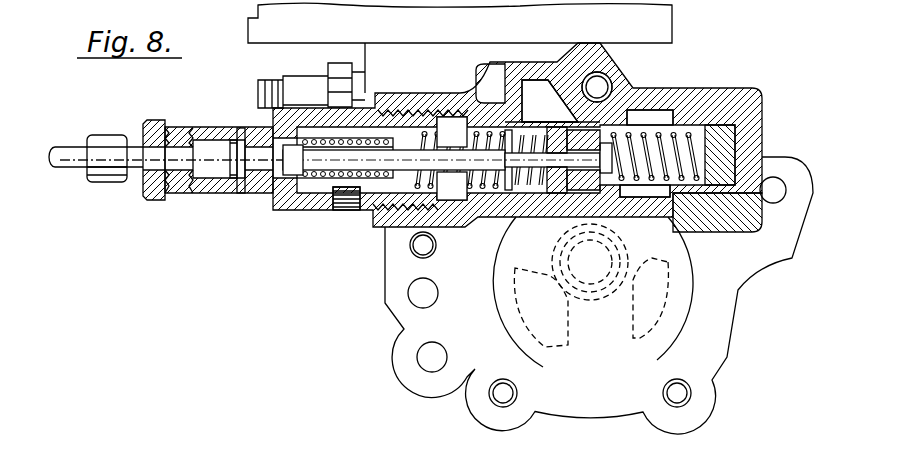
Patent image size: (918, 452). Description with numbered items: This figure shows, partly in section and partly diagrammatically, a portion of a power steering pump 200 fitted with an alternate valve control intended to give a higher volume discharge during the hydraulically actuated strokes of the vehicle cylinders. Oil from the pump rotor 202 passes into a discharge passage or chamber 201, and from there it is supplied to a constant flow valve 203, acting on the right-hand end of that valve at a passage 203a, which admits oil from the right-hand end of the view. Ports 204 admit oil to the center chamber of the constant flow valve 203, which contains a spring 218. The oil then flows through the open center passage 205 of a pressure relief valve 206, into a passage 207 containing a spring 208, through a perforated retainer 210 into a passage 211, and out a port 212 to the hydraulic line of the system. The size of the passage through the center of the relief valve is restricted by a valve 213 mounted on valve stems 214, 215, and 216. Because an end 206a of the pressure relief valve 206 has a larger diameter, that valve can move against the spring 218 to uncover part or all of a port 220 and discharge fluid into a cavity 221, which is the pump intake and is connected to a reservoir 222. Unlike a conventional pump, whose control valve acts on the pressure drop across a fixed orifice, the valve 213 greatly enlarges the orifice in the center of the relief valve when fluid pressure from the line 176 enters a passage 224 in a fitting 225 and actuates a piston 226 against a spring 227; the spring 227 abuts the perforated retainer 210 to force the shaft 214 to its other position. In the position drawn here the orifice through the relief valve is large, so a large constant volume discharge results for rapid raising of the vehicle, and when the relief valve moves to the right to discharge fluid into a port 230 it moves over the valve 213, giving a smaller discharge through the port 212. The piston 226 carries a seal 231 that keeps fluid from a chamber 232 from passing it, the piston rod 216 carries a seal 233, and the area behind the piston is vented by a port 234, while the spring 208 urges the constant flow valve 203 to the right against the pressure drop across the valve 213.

The line 176 is at (68, 153).
The pump 200 is at (750, 100).
The discharge passage or chamber 201 is at (668, 220).
The pump rotor 202 is at (650, 313).
The constant flow valve 203 is at (715, 133).
The passage 203a is at (733, 195).
The ports 204 is at (645, 194).
The open center passage 205 is at (640, 112).
The pressure relief valve 206 is at (612, 88).
The end of the valve 206a is at (520, 125).
The passage 207 is at (458, 228).
The spring 208 is at (480, 195).
The perforated retainer 210 is at (410, 140).
The passage 211 is at (322, 178).
The port 212 is at (348, 210).
The valve 213 is at (585, 192).
The valve stem 214 is at (560, 170).
The valve stem 215 is at (492, 145).
The valve stem 216 is at (266, 170).
The spring 218 is at (707, 150).
The port 220 is at (552, 140).
The cavity 221 is at (532, 88).
The reservoir 222 is at (658, 13).
The passage 224 is at (137, 150).
The fitting 225 is at (143, 199).
The piston 226 is at (237, 147).
The spring 227 is at (312, 178).
The port 230 is at (548, 218).
The seal 231 is at (238, 190).
The chamber 232 is at (215, 170).
The seal 233 is at (293, 178).
The port 234 is at (242, 143).